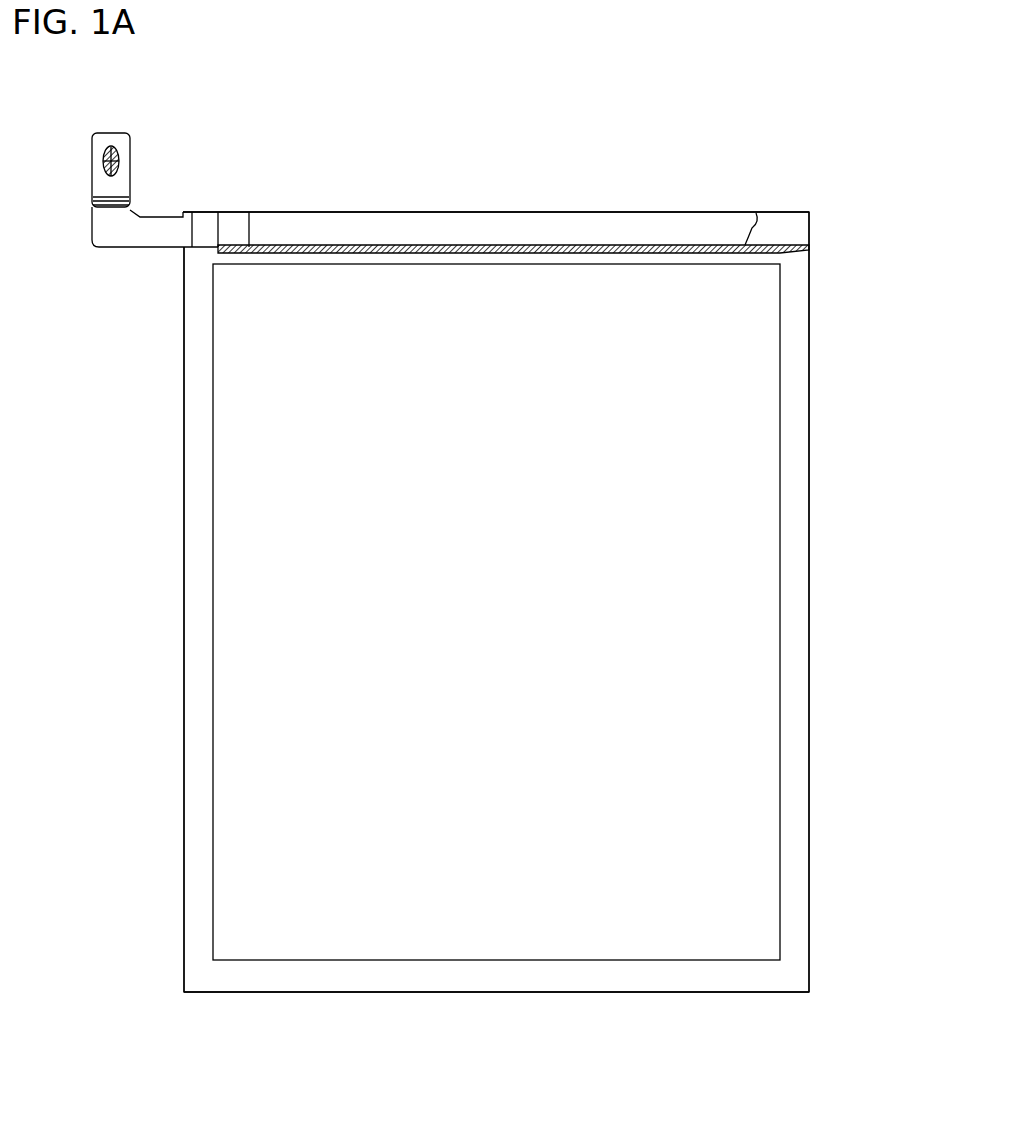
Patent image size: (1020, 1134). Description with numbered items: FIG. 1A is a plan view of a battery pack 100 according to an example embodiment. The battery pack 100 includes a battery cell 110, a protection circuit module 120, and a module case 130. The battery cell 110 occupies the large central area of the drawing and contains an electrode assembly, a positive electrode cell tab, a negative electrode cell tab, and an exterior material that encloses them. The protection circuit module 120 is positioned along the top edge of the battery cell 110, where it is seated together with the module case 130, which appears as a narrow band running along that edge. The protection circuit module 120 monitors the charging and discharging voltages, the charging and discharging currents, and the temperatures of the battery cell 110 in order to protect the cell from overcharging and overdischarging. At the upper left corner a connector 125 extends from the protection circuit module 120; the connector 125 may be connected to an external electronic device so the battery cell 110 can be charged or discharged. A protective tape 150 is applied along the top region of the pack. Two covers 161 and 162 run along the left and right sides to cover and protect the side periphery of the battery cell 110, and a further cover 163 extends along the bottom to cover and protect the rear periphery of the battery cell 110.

The battery pack 100 is at (838, 166).
The battery cell 110 is at (735, 530).
The protection circuit module 120 is at (216, 203).
The connector 125 is at (160, 222).
The module case 130 is at (607, 265).
The protective tape 150 is at (483, 222).
The cover 161 is at (190, 557).
The cover 162 is at (803, 700).
The cover 163 is at (505, 985).